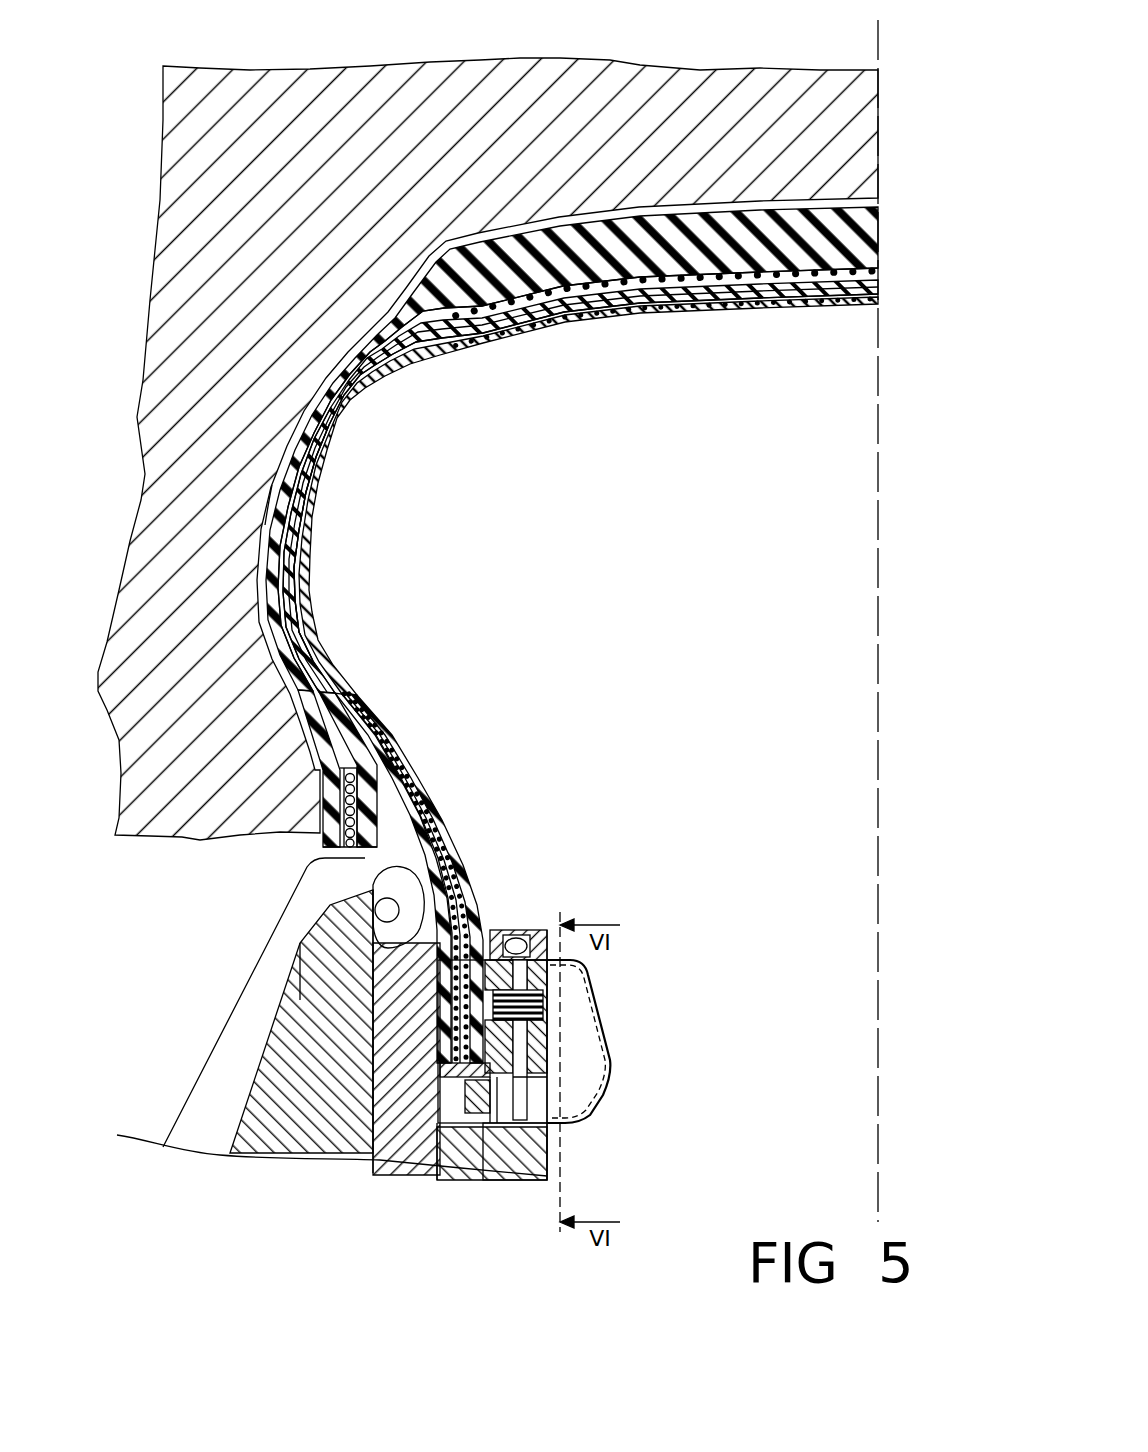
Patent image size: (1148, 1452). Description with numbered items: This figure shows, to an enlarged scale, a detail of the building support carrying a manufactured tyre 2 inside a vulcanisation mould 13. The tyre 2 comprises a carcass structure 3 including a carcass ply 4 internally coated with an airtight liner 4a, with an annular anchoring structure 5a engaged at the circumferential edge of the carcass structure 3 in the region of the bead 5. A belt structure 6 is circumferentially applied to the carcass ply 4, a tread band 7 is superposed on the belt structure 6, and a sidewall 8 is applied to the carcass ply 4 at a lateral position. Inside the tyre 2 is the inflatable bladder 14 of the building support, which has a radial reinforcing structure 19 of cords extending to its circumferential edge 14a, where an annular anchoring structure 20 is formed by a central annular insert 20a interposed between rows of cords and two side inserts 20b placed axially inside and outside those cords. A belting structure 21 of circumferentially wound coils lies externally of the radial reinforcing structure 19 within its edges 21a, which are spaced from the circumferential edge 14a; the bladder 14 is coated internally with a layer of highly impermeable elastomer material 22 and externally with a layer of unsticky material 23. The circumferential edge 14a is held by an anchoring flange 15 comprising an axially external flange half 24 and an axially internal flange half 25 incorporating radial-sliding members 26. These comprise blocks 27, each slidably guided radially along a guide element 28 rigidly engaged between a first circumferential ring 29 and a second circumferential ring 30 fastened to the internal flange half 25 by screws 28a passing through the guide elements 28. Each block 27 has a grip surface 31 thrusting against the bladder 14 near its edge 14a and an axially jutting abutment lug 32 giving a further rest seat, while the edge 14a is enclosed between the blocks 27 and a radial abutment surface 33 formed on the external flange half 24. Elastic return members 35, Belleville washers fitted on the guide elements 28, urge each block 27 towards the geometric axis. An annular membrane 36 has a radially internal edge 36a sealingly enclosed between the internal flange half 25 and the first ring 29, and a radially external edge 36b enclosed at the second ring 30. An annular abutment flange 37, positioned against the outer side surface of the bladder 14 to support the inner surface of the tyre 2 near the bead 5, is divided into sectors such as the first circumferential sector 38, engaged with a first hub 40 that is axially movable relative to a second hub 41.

The tyre 2 is at (882, 165).
The carcass structure 3 is at (270, 560).
The carcass ply 4 is at (295, 685).
The liner 4a is at (300, 600).
The bead 5 is at (315, 797).
The annular anchoring structure 5a is at (325, 832).
The belt structure 6 is at (765, 270).
The tread band 7 is at (832, 222).
The sidewall 8 is at (280, 497).
The mould 13 is at (180, 335).
The inflatable bladder 14 is at (492, 348).
The circumferential edge 14a is at (490, 932).
The anchoring flange 15 is at (453, 1173).
The radial reinforcing structure 19 is at (425, 788).
The annular anchoring structure 20 is at (300, 1100).
The central annular insert 20a is at (470, 912).
The side insert 20b is at (455, 872).
The belting structure 21 is at (780, 312).
The edge of belting structure 21a is at (575, 312).
The layer of highly impermeable elastomer material 22 is at (712, 312).
The layer of unsticky material 23 is at (440, 345).
The axially external flange half 24 is at (365, 1160).
The axially internal flange half 25 is at (545, 1180).
The radial-sliding members 26 is at (575, 1043).
The block 27 is at (560, 1085).
The guide element 28 is at (560, 1060).
The screw 28a is at (560, 978).
The first circumferential ring 29 is at (560, 1125).
The second circumferential ring 30 is at (560, 997).
The grip surface 31 is at (497, 1137).
The abutment lug 32 is at (392, 1130).
The radial abutment surface 33 is at (435, 1017).
The elastic return members 35 is at (560, 1012).
The annular membrane 36 is at (600, 1100).
The radially internal circumferential edge 36a is at (493, 1130).
The radially external circumferential edge 36b is at (520, 940).
The annular abutment flange 37 is at (440, 838).
The first circumferential sector 38 is at (378, 790).
The first hub 40 is at (330, 1148).
The second hub 41 is at (205, 1140).